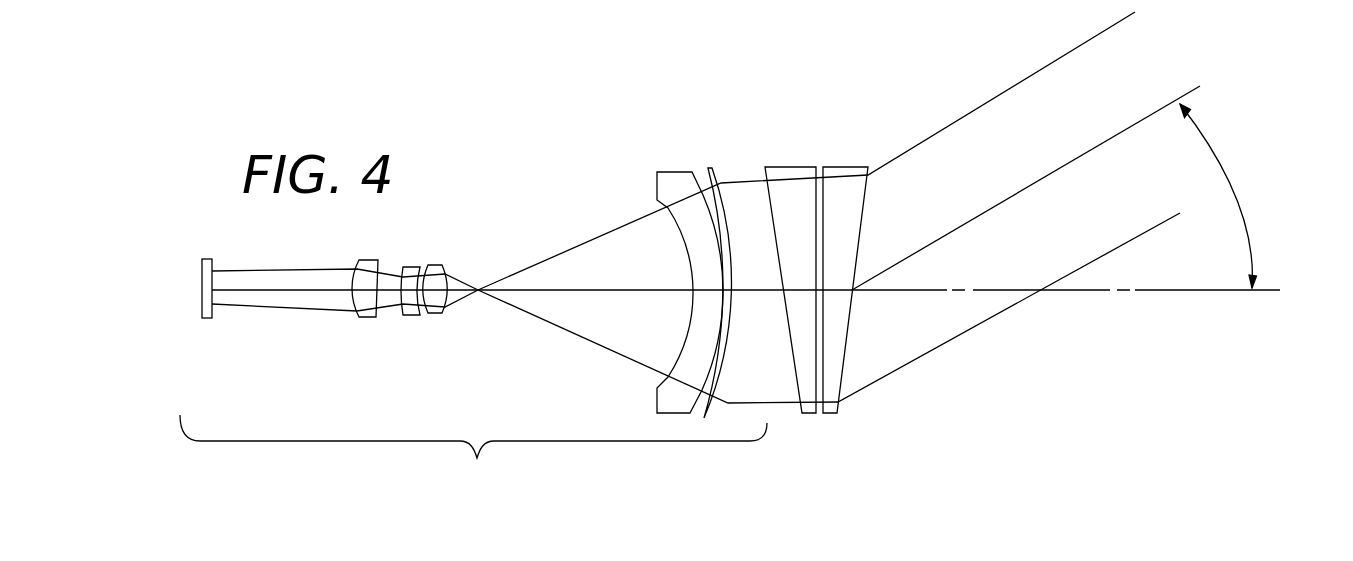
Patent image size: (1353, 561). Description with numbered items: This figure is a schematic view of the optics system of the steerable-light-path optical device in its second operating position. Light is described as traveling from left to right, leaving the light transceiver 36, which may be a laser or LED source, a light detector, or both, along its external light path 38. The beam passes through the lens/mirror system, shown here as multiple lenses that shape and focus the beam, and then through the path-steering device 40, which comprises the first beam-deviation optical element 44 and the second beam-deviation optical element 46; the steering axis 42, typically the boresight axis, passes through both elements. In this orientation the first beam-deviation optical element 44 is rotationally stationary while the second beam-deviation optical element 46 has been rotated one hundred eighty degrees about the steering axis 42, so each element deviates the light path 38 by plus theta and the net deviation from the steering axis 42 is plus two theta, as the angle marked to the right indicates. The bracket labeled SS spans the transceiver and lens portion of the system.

The light transceiver 36 is at (202, 281).
The light path 38 is at (1033, 185).
The path-steering device 40 is at (757, 147).
The steering axis 42 is at (1163, 292).
The first beam-deviation optical element 44 is at (788, 167).
The second beam-deviation optical element 46 is at (850, 167).
The light source section SS is at (473, 456).